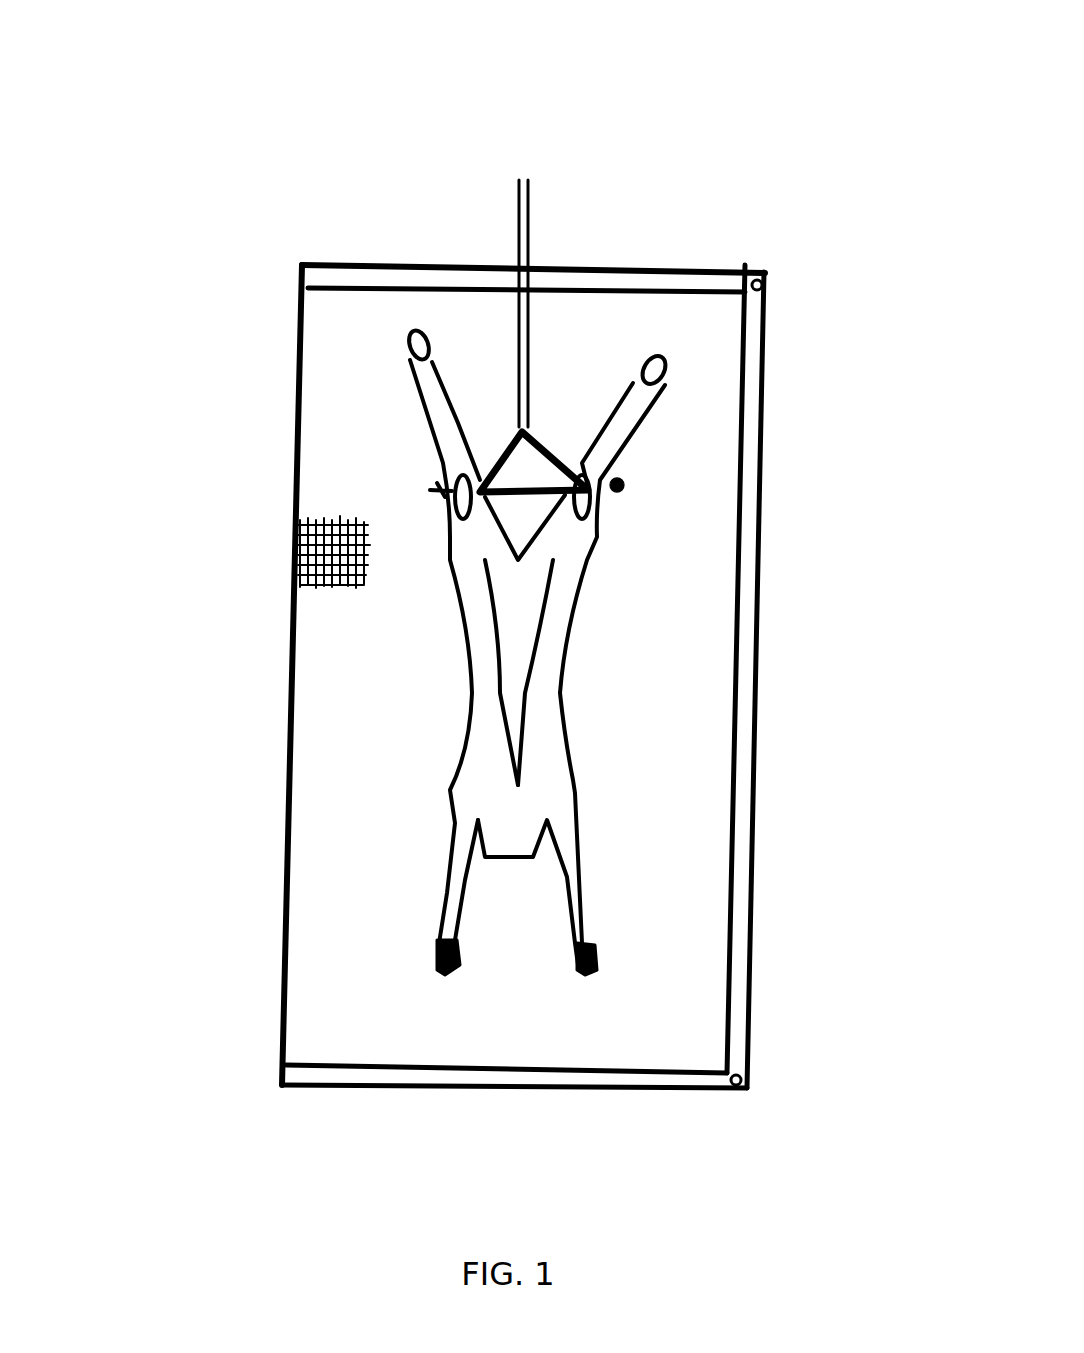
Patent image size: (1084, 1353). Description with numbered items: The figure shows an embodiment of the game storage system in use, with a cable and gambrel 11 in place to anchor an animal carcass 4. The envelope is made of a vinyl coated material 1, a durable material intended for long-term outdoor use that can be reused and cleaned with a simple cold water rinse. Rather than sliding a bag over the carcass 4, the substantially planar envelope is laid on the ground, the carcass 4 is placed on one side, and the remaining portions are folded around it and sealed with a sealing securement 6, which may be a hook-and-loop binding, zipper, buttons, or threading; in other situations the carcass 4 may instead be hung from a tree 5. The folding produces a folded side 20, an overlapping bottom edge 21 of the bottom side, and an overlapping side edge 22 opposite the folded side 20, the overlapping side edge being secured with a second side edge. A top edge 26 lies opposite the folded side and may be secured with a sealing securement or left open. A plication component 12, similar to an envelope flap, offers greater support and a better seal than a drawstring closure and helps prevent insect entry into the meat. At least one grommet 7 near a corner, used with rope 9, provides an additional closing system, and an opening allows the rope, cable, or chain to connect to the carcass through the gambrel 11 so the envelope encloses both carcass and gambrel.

The vinyl coated material 1 is at (277, 567).
The animal carcass 4 is at (600, 797).
The tree 5 is at (778, 645).
The sealing securement 6 is at (388, 262).
The grommet 7 is at (767, 283).
The rope 9 is at (537, 185).
The gambrel 11 is at (624, 484).
The plication component 12 is at (283, 667).
The folded side 20 is at (300, 460).
The overlapping bottom edge 21 is at (620, 1080).
The overlapping side edge 22 is at (748, 532).
The top edge 26 is at (330, 270).